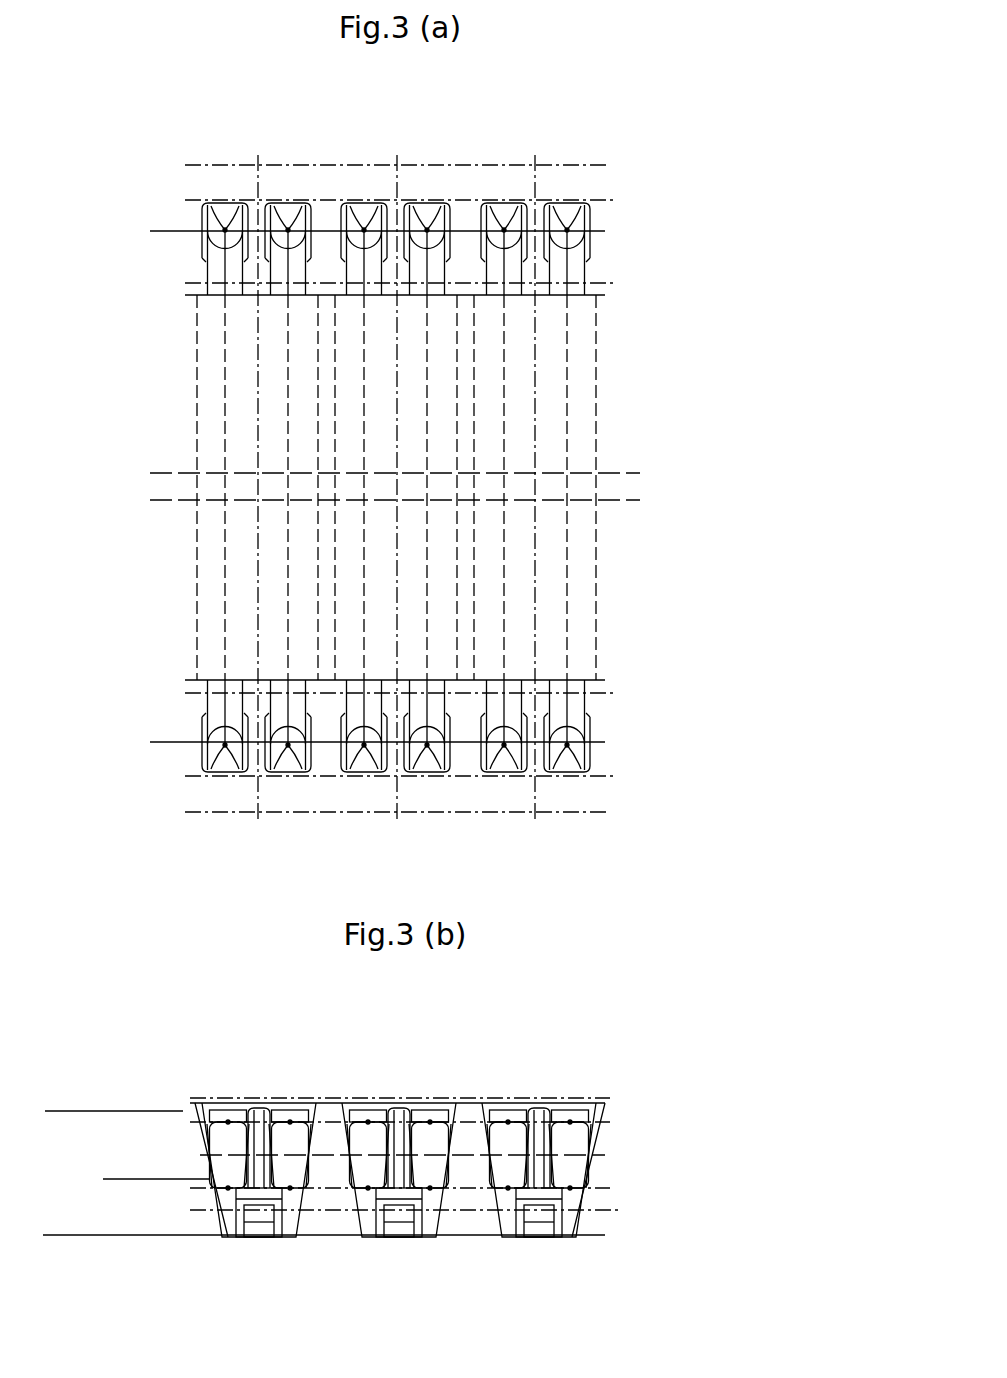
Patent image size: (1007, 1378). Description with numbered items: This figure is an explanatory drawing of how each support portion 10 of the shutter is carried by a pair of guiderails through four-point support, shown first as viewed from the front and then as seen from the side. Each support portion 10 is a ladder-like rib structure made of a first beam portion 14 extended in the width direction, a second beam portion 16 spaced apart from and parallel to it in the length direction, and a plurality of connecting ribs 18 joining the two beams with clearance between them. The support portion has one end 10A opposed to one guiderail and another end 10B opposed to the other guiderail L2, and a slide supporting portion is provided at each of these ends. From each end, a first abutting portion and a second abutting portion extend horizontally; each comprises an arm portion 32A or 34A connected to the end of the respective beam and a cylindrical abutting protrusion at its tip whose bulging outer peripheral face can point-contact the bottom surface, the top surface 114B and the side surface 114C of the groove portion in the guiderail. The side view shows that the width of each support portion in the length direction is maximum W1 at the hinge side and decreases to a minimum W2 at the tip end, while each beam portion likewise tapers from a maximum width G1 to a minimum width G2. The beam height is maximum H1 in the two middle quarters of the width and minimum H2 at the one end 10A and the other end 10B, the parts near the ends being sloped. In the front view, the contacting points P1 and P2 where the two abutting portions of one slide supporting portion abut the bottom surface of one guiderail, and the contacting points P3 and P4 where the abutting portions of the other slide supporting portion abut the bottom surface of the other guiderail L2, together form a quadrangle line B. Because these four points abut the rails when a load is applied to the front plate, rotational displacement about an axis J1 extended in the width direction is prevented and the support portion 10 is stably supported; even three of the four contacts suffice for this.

The support portion 10 is at (262, 1240).
The one end of the support portion 10A is at (400, 680).
The other end of the support portion 10B is at (262, 296).
The first beam portion 14 is at (242, 1230).
The second beam portion 16 is at (272, 1232).
The connecting rib 18 is at (255, 1232).
The arm portion 32A is at (215, 273).
The arm portion 34A is at (575, 273).
The top surface 114B is at (612, 1122).
The side surface 114C is at (612, 200).
The quadrangle line B is at (222, 345).
The axis extended in the width direction J1 is at (393, 145).
The guiderail L2 is at (607, 164).
The contacting point P1 is at (223, 777).
The contacting point P2 is at (290, 777).
The contacting point P3 is at (222, 199).
The contacting point P4 is at (290, 199).
The maximum width of the support portion W1 is at (460, 1103).
The minimum width of the support portion W2 is at (367, 1347).
The maximum width of the beam portion G1 is at (412, 1103).
The minimum width of the beam portion G2 is at (367, 1291).
The maximum height of the beam portion H1 is at (63, 1111).
The minimum height of the beam portion H2 is at (117, 1111).